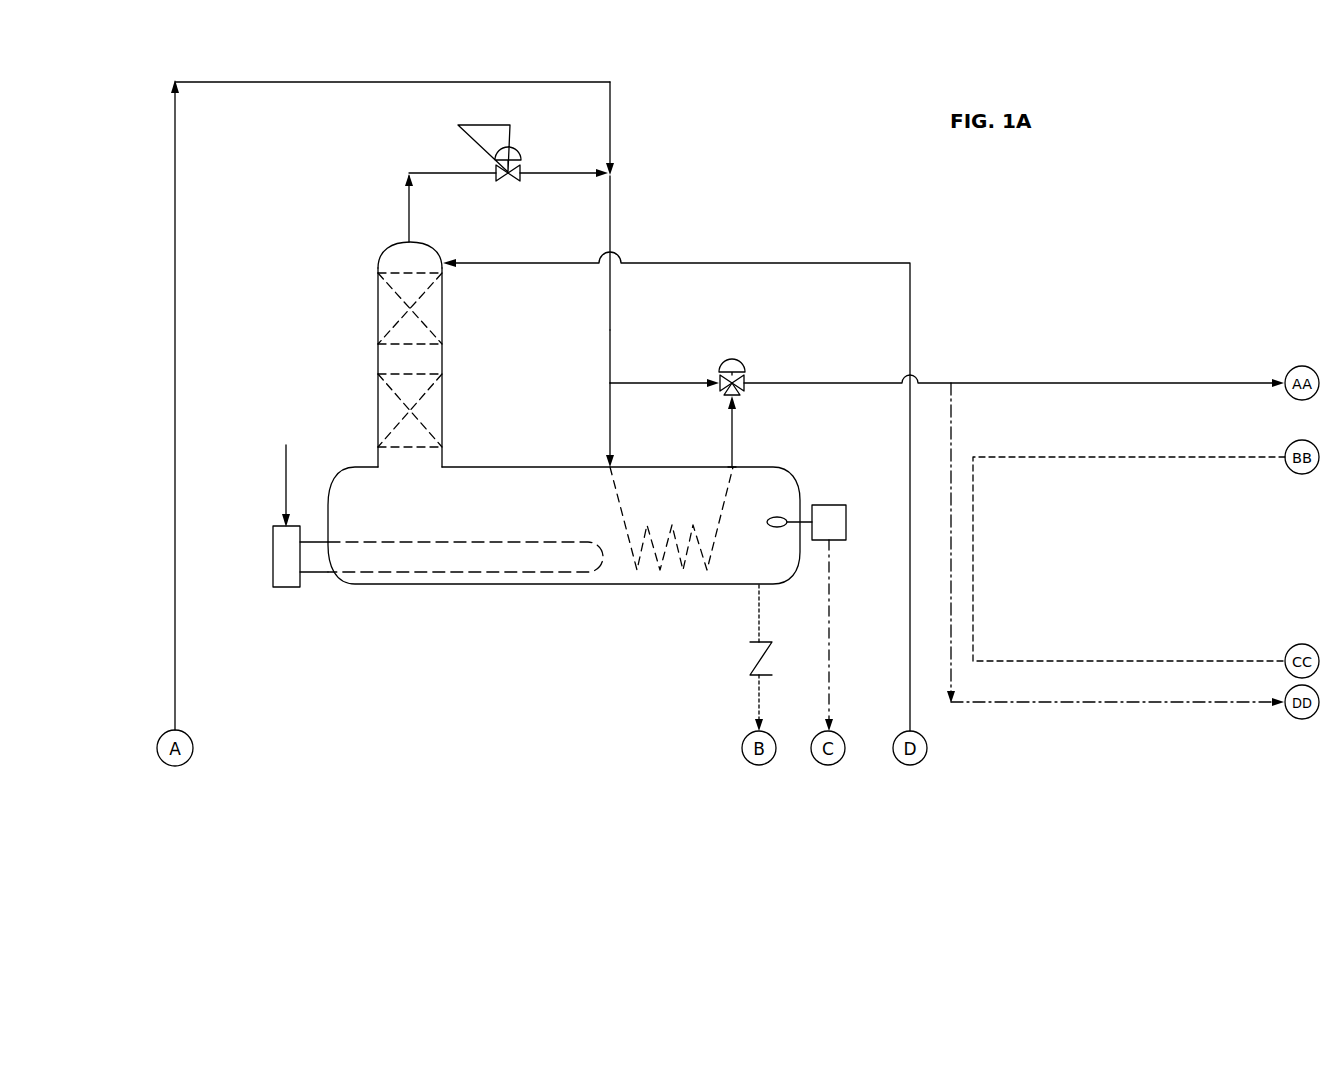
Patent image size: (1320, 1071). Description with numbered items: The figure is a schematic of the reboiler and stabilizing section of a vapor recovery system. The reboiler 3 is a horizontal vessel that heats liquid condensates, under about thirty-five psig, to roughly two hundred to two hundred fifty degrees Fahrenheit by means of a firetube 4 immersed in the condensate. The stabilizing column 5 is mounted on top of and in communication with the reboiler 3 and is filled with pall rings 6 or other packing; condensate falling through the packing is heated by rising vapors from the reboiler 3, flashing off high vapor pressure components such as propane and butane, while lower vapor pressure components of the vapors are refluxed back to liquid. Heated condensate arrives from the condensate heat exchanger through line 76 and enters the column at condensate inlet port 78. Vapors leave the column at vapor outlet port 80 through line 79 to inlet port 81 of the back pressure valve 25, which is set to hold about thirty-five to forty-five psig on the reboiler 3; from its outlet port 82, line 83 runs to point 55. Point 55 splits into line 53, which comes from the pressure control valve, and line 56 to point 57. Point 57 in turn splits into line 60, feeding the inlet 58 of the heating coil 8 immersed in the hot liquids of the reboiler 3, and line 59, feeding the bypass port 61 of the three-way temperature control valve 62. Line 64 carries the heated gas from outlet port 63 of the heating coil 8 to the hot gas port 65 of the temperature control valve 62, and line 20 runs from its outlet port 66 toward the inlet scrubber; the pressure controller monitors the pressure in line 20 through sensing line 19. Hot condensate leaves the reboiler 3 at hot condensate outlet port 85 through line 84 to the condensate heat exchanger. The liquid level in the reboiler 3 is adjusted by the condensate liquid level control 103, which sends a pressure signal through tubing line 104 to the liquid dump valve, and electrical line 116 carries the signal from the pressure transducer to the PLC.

The reboiler 3 is at (475, 467).
The firetube 4 is at (385, 542).
The stabilizing column 5 is at (378, 357).
The pall rings 6 is at (433, 322).
The heating coil 8 is at (646, 525).
The sensing line 19 is at (955, 432).
The line 20 is at (937, 383).
The back pressure valve 25 is at (518, 143).
The line 53 is at (242, 80).
The point 55 is at (614, 170).
The line 56 is at (608, 312).
The point 57 is at (608, 393).
The inlet 58 is at (614, 465).
The line 59 is at (668, 390).
The line 60 is at (608, 430).
The bypass port 61 is at (716, 380).
The temperature control valve 62 is at (742, 360).
The outlet port 63 is at (742, 467).
The line 64 is at (735, 423).
The hot gas port 65 is at (726, 397).
The outlet port 66 is at (745, 383).
The line 76 is at (520, 263).
The condensate inlet port 78 is at (447, 268).
The line 79 is at (407, 172).
The vapor outlet port 80 is at (407, 242).
The inlet port 81 is at (495, 170).
The outlet port 82 is at (522, 170).
The line 83 is at (603, 182).
The line 84 is at (762, 700).
The hot condensate outlet port 85 is at (766, 590).
The condensate liquid level control 103 is at (843, 542).
The tubing line 104 is at (833, 650).
The electrical line 116 is at (976, 635).